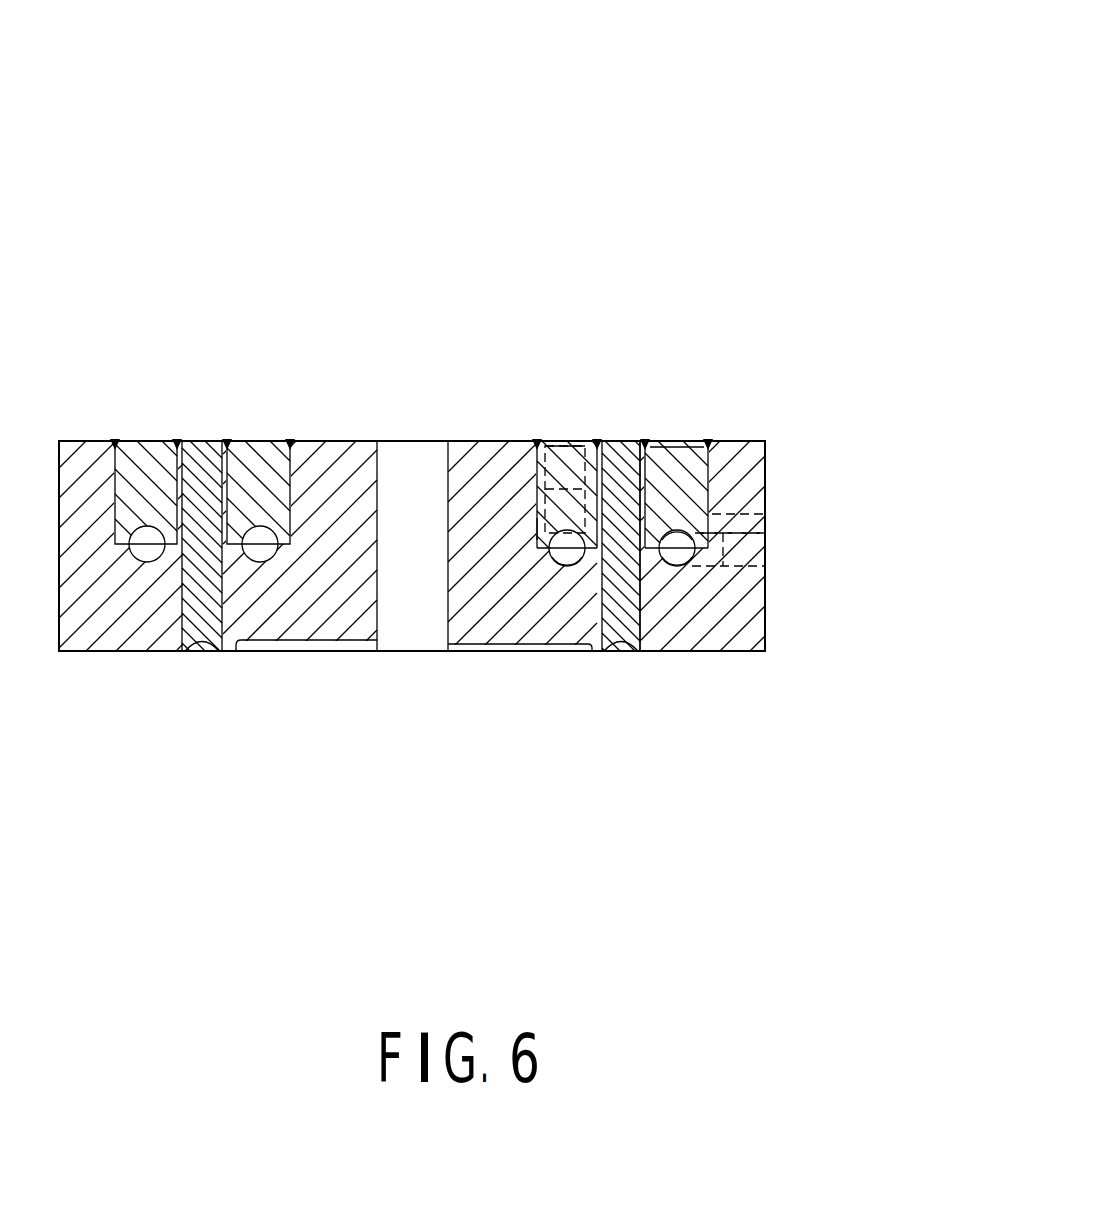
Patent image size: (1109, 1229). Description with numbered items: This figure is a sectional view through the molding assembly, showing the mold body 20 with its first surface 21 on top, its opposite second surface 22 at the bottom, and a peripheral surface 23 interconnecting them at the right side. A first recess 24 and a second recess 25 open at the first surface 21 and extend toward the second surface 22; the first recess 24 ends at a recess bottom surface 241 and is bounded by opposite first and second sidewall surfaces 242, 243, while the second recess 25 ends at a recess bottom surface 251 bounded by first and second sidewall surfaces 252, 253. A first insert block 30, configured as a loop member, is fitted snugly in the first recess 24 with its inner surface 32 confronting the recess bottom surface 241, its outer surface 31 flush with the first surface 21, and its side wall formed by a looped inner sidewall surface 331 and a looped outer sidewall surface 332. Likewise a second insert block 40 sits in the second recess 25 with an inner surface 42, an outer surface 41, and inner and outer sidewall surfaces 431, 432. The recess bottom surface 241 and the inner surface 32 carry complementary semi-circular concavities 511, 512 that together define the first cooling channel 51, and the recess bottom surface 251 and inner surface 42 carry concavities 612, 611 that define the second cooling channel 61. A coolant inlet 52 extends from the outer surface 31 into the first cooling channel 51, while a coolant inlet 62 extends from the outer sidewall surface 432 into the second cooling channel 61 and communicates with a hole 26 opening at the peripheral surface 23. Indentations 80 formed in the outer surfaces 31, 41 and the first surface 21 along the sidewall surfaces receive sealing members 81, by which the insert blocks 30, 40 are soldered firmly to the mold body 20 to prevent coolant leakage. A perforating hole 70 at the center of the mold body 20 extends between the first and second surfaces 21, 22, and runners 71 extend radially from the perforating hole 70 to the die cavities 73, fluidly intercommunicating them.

The mold body 20 is at (775, 638).
The first surface 21 is at (750, 441).
The second surface 22 is at (733, 651).
The peripheral surface 23 is at (767, 590).
The first recess 24 is at (524, 440).
The recess bottom surface 241 is at (525, 697).
The first sidewall surface 242 is at (466, 291).
The second sidewall surface 243 is at (583, 363).
The second recess 25 is at (739, 477).
The recess bottom surface 251 is at (680, 748).
The first sidewall surface 252 is at (666, 315).
The second sidewall surface 253 is at (755, 277).
The hole 26 is at (767, 527).
The first insert block 30 is at (572, 406).
The outer surface 31 is at (548, 441).
The inner surface 32 is at (537, 548).
The inner sidewall surface 331 is at (537, 481).
The outer sidewall surface 332 is at (597, 520).
The second insert block 40 is at (795, 405).
The outer surface 41 is at (674, 531).
The inner surface 42 is at (646, 548).
The inner sidewall surface 431 is at (645, 480).
The outer sidewall surface 432 is at (708, 472).
The first cooling channel 51 is at (555, 657).
The concavity 511 is at (557, 563).
The concavity 512 is at (537, 530).
The coolant inlet 52 is at (587, 450).
The second cooling channel 61 is at (778, 638).
The concavity 611 is at (667, 562).
The concavity 612 is at (709, 486).
The coolant inlet 62 is at (767, 516).
The perforating hole 70 is at (413, 641).
The runners 71 is at (313, 641).
The die cavities 73 is at (190, 651).
The indentations 80 is at (239, 352).
The sealing members 81 is at (115, 441).